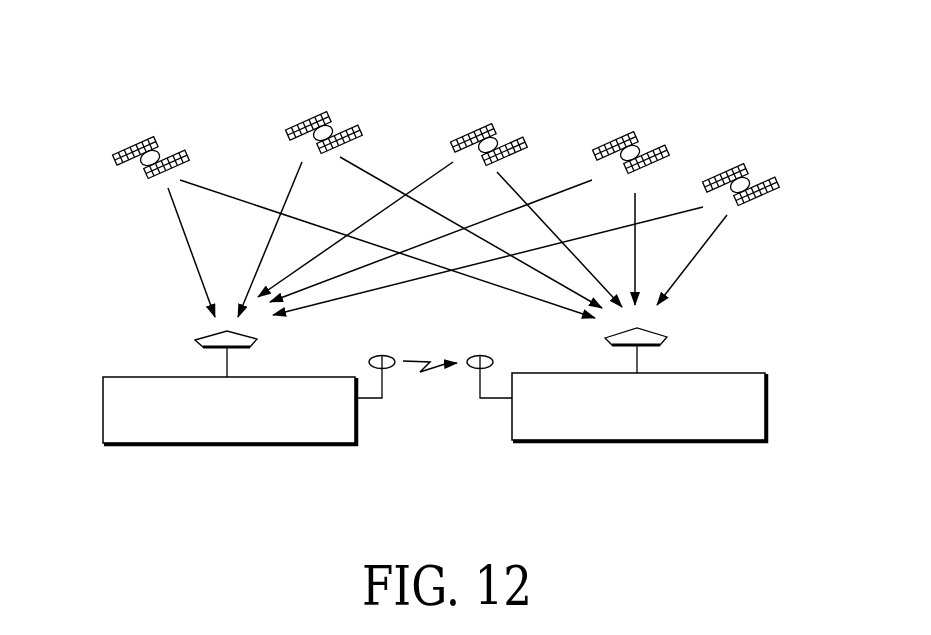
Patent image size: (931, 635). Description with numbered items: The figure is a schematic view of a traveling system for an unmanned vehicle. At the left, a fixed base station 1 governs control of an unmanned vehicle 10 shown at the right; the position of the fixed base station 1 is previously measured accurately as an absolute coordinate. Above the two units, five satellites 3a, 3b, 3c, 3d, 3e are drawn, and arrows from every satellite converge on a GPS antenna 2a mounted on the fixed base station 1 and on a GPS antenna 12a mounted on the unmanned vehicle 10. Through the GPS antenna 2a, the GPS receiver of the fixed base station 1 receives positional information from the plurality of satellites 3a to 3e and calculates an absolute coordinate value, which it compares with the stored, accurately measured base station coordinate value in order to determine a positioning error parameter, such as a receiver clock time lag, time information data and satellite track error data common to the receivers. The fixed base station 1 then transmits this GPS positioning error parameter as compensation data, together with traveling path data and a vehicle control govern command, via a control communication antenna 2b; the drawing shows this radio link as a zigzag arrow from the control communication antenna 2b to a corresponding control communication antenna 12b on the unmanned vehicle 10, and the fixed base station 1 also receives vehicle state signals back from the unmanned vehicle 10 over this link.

The fixed base station 1 is at (103, 398).
The GPS antenna 2a is at (200, 352).
The control communication antenna 2b is at (383, 385).
The satellite 3a is at (137, 150).
The satellite 3b is at (313, 122).
The satellite 3c is at (470, 133).
The satellite 3d is at (613, 140).
The satellite 3e is at (723, 172).
The unmanned vehicle 10 is at (767, 388).
The GPS antenna of unmanned vehicle 12a is at (663, 340).
The control communication antenna of unmanned vehicle 12b is at (480, 385).